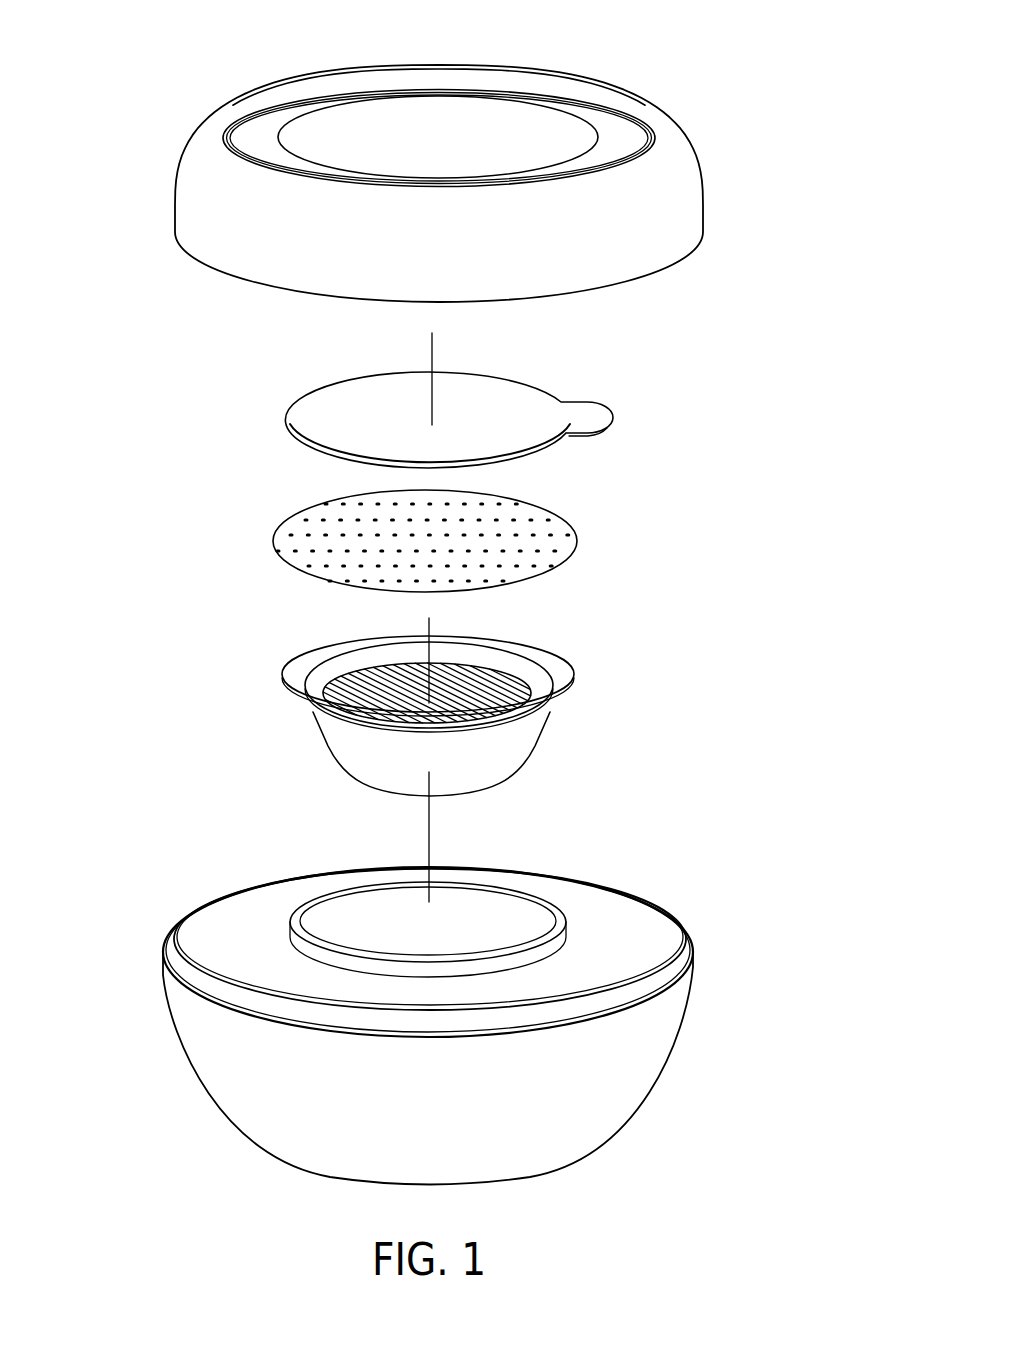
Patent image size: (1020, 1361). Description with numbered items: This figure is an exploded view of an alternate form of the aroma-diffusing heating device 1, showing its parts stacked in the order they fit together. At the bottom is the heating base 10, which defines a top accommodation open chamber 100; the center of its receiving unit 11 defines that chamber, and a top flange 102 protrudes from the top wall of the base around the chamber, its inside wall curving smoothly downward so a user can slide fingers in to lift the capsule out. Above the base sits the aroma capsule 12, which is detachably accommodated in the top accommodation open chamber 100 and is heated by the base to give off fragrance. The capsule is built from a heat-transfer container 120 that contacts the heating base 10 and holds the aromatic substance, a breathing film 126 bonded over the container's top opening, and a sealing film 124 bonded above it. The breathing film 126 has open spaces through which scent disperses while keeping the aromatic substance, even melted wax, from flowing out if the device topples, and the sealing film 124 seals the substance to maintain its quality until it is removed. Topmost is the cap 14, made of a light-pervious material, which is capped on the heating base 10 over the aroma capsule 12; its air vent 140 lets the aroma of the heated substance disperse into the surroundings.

The aroma-diffusing heating device 1 is at (127, 243).
The heating base 10 is at (466, 998).
The receiving unit 11 is at (690, 952).
The top accommodation open chamber 100 is at (508, 922).
The top flange 102 is at (290, 937).
The aroma capsule 12 is at (672, 335).
The heat-transfer container 120 is at (535, 744).
The sealing film 124 is at (503, 397).
The breathing film 126 is at (577, 545).
The cap 14 is at (484, 165).
The air vent 140 is at (517, 125).